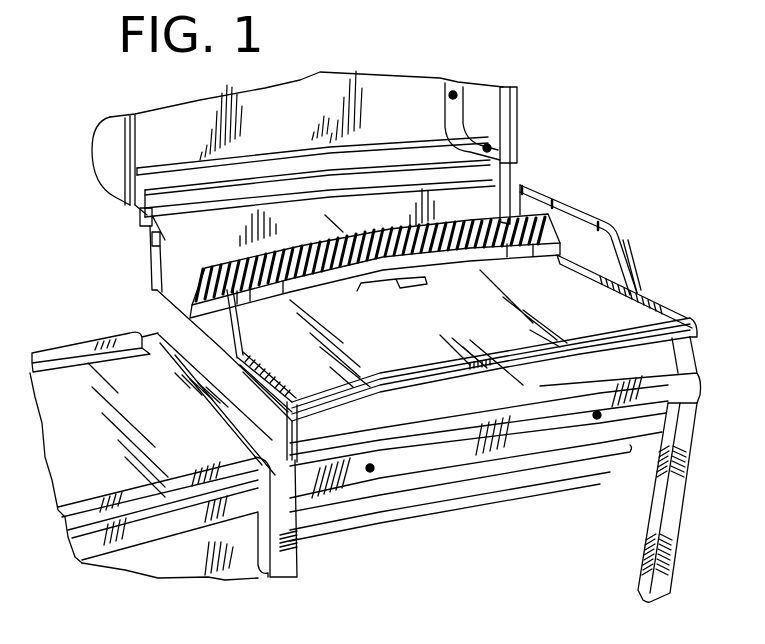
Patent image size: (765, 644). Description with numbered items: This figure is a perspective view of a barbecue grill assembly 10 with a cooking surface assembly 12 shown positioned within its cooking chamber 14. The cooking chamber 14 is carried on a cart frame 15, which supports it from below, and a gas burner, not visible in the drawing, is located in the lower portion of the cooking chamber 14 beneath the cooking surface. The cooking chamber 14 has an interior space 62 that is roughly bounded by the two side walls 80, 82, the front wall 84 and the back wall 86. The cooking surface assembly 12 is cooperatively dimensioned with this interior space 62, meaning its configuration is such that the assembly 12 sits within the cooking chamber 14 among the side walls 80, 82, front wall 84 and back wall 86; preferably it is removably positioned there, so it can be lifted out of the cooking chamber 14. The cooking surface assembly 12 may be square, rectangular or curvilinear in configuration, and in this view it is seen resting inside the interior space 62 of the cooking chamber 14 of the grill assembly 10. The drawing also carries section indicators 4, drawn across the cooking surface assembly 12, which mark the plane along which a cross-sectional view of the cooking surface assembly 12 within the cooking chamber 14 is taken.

The barbecue grill assembly 10 is at (608, 160).
The interior space 62 is at (600, 246).
The cooking chamber 14 is at (636, 255).
The cooking surface assembly 12 is at (618, 310).
The side wall 82 is at (682, 347).
The cart frame 15 is at (700, 427).
The front wall 84 is at (335, 428).
The side wall 80 is at (238, 392).
The back wall 86 is at (160, 330).
The section line 4- 4 is at (352, 220).